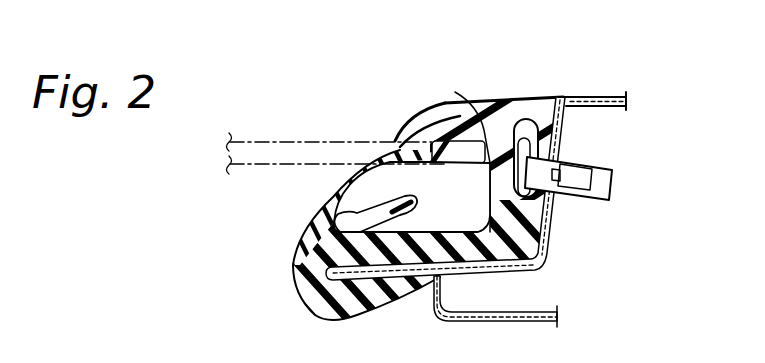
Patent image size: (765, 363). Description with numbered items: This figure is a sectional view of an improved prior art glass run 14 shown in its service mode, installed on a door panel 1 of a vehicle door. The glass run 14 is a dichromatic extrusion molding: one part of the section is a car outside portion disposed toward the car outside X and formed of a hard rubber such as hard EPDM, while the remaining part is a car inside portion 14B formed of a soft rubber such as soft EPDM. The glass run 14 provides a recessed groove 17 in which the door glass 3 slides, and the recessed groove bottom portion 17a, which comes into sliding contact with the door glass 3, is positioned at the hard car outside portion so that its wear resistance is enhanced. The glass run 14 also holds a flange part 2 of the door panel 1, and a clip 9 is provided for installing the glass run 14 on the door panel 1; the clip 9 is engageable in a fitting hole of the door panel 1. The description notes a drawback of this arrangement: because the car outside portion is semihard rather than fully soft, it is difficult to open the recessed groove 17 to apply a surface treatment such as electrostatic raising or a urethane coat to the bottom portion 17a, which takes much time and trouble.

The door panel 1 is at (610, 96).
The flange part 2 is at (374, 289).
The door glass 3 is at (223, 133).
The clip 9 is at (602, 183).
The glass run 14 is at (531, 108).
The car inside portion 14B is at (545, 255).
The recessed groove 17 is at (456, 204).
The recessed groove bottom portion 17a is at (455, 92).
The car outside X is at (272, 104).